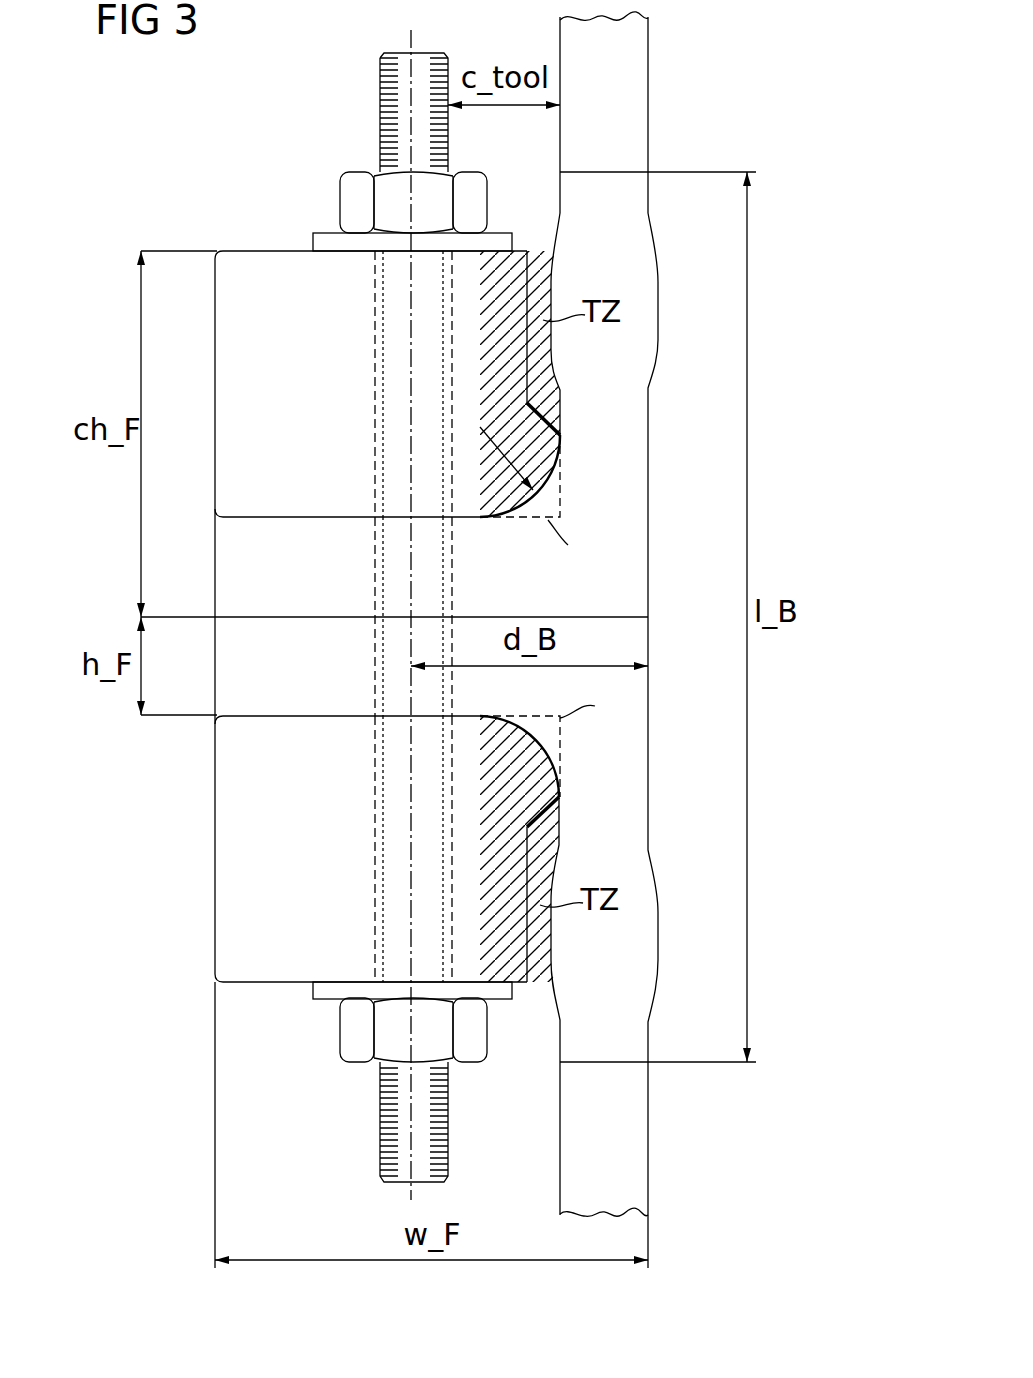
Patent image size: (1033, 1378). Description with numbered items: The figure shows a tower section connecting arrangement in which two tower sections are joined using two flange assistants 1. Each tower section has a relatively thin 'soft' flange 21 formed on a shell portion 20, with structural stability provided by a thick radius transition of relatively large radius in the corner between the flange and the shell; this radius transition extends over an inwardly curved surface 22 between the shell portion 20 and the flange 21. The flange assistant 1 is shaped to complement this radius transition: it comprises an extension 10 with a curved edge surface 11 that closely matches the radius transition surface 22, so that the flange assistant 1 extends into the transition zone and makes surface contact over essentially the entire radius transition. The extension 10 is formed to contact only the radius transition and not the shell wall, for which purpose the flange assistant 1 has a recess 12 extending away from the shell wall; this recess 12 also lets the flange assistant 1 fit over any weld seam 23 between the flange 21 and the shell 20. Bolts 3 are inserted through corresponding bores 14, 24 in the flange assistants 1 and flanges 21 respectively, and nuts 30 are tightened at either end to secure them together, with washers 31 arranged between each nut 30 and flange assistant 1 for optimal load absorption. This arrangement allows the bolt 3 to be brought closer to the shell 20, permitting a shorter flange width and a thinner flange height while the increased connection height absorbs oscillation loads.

The flange assistant 1 is at (234, 262).
The bolt 3 is at (380, 88).
The extension 10 is at (547, 450).
The curved edge surface 11 is at (468, 513).
The recess 12 is at (527, 860).
The bore 14 is at (374, 375).
The shell portion 20 is at (633, 93).
The flange 21 is at (232, 570).
The inwardly curved surface 22 is at (545, 493).
The weld seam 23 is at (652, 275).
The bore 24 is at (374, 571).
The nut 30 is at (345, 195).
The washer 31 is at (318, 243).